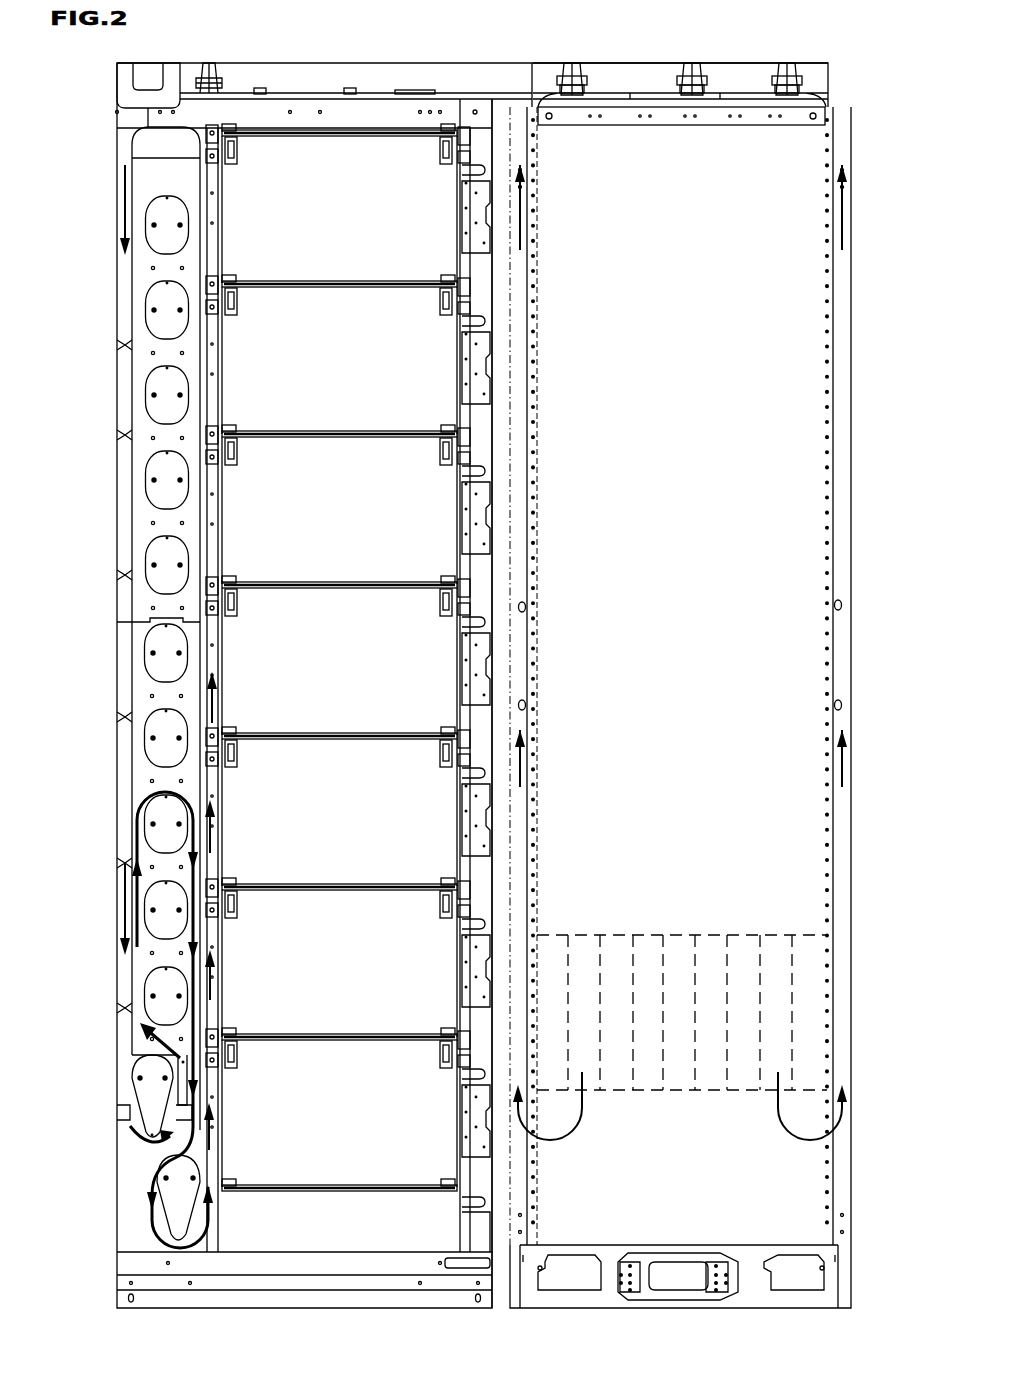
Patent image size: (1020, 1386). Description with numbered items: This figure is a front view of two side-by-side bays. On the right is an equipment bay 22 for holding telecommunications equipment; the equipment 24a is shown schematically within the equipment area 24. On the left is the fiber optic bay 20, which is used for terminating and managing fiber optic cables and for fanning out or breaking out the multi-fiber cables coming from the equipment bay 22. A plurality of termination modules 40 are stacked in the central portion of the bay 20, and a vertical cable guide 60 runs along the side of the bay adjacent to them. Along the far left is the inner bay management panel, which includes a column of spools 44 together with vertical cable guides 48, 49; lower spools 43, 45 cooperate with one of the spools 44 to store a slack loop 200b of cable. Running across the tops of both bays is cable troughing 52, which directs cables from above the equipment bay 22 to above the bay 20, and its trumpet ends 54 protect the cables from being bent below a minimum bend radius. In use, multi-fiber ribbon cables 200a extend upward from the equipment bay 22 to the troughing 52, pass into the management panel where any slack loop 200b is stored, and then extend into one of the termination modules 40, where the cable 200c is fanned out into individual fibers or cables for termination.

The bay 20 is at (355, 51).
The equipment bay 22 is at (852, 345).
The equipment area 24 is at (685, 608).
The equipment 24a is at (675, 912).
The termination modules 40 is at (360, 660).
The lower spool 43 is at (135, 1092).
The spools 44 is at (150, 825).
The lower spool 45 is at (185, 1240).
The vertical cable guide 48 is at (125, 660).
The vertical cable guide 49 is at (213, 665).
The cable troughing 52 is at (462, 66).
The trumpet ends 54 is at (117, 85).
The vertical cable guide 60 is at (497, 612).
The multi-fiber ribbon cables 200a is at (520, 212).
The slack loop 200b is at (125, 207).
The cable 200c is at (212, 705).